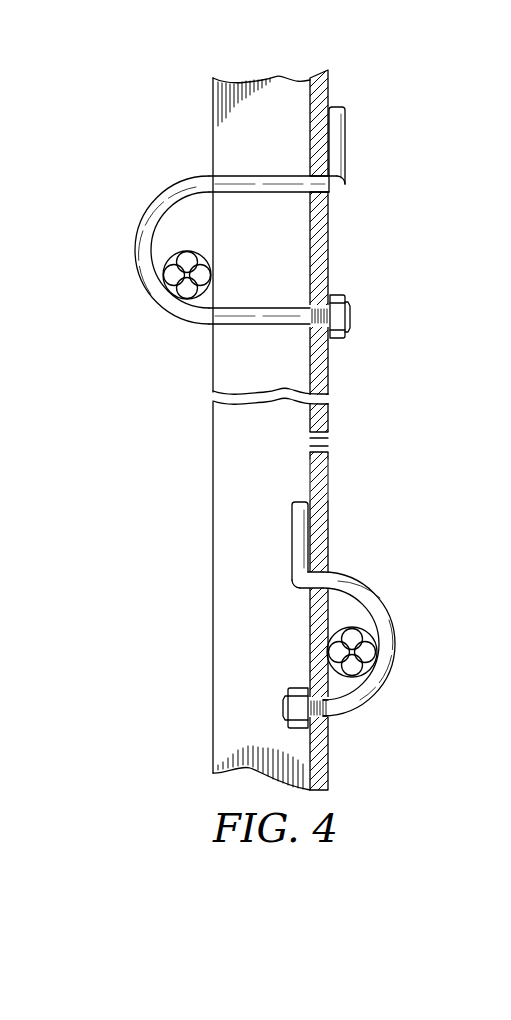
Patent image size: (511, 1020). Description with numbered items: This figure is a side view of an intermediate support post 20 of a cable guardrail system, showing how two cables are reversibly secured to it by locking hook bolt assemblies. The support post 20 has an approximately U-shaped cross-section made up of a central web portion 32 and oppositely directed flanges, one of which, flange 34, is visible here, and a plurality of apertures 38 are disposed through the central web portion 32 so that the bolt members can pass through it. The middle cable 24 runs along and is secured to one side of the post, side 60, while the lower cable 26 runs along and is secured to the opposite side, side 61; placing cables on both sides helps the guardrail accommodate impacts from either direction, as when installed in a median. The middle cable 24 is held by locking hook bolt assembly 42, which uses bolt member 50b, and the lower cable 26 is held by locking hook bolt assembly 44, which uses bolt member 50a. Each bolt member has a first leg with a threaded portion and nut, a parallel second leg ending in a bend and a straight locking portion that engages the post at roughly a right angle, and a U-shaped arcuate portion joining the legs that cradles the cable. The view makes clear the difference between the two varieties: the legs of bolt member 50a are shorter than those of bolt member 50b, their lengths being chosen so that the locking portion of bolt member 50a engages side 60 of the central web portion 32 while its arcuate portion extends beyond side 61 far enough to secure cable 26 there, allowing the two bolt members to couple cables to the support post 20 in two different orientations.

The intermediate support post 20 is at (210, 118).
The middle cable 24 is at (173, 275).
The lower cable 26 is at (367, 637).
The central web portion 32 is at (330, 247).
The flange 34 is at (212, 507).
The aperture 38 is at (330, 197).
The locking hook bolt assembly 42 is at (225, 236).
The locking hook bolt assembly 44 is at (357, 628).
The bolt member 50a is at (358, 628).
The bolt member 50b is at (250, 204).
The side of support post 60 is at (311, 478).
The side of support post 61 is at (330, 478).